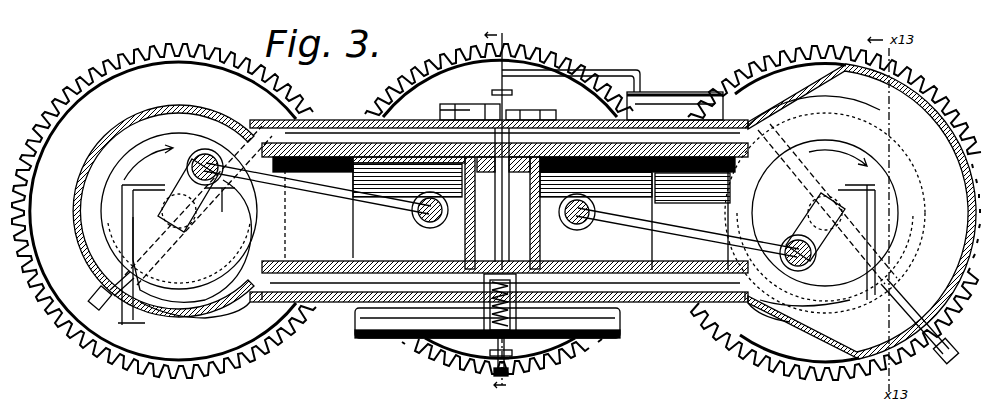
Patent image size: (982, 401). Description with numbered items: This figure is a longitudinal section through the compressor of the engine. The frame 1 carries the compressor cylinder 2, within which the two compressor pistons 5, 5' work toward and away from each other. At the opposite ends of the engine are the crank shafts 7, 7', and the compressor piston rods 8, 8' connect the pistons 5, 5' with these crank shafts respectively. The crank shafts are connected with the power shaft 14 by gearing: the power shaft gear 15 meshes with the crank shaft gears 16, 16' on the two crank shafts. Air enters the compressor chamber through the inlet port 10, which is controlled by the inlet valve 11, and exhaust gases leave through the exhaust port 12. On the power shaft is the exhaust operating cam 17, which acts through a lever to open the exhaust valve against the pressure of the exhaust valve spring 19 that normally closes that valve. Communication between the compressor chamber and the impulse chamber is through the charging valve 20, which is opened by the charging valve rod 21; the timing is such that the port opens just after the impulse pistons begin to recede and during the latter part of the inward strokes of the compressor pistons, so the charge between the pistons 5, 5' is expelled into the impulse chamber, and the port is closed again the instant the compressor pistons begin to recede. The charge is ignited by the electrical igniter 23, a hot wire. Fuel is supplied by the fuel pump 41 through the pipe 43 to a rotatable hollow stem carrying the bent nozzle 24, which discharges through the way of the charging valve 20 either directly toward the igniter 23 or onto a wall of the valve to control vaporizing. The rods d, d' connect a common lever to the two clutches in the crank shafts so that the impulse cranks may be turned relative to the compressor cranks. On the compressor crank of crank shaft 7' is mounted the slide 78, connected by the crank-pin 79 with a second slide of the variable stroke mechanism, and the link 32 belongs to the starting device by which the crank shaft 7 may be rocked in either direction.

The frame 1 is at (342, 120).
The compressor cylinder 2 is at (335, 303).
The compressor piston 5 is at (380, 213).
The compressor piston 5' is at (630, 213).
The crank shaft 7 is at (172, 215).
The crank shaft 7' is at (850, 214).
The compressor piston rod 8 is at (326, 198).
The compressor piston rod 8' is at (679, 225).
The inlet port 10 is at (600, 335).
The inlet valve 11 is at (477, 307).
The exhaust port 12 is at (500, 334).
The power shaft 14 is at (380, 260).
The power shaft gear 15 is at (432, 66).
The crank shaft gear 16 is at (164, 208).
The crank shaft gear 16' is at (834, 208).
The exhaust operating cam 17 is at (428, 240).
The exhaust valve spring 19 is at (538, 360).
The charging valve 20 is at (535, 112).
The charging valve rod 21 is at (468, 104).
The electrical igniter 23 is at (420, 305).
The bent nozzle 24 is at (503, 214).
The link 32 is at (495, 203).
The fuel pump 41 is at (700, 93).
The pipe 43 is at (637, 68).
The slide 78 is at (818, 265).
The crank-pin 79 is at (820, 292).
The rod d is at (195, 325).
The rod d' is at (730, 332).